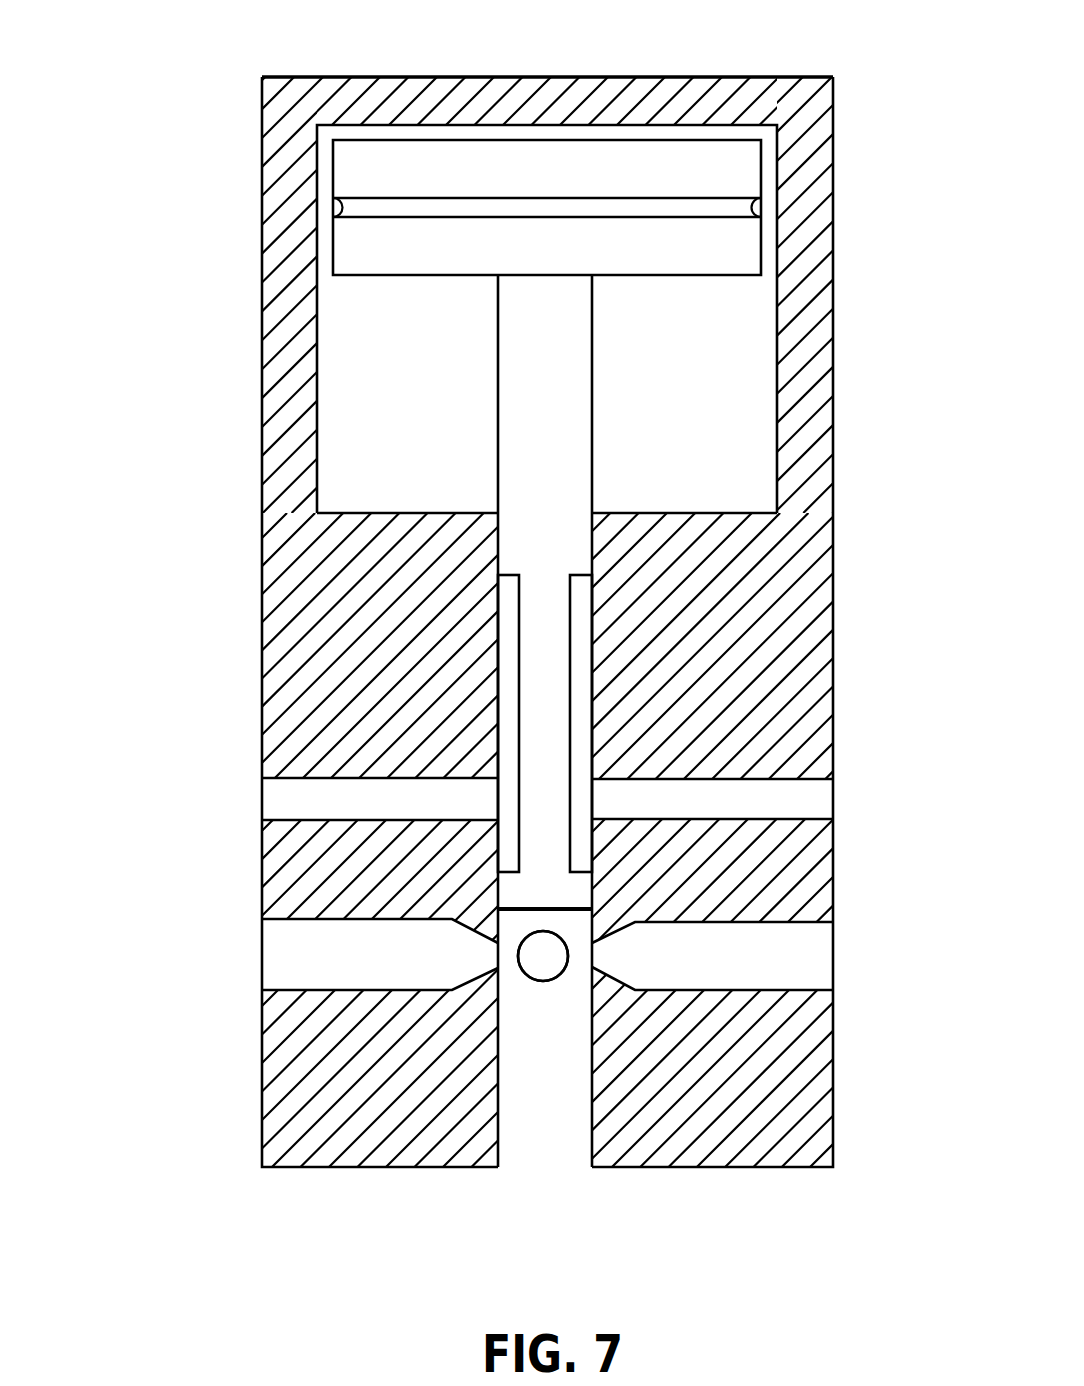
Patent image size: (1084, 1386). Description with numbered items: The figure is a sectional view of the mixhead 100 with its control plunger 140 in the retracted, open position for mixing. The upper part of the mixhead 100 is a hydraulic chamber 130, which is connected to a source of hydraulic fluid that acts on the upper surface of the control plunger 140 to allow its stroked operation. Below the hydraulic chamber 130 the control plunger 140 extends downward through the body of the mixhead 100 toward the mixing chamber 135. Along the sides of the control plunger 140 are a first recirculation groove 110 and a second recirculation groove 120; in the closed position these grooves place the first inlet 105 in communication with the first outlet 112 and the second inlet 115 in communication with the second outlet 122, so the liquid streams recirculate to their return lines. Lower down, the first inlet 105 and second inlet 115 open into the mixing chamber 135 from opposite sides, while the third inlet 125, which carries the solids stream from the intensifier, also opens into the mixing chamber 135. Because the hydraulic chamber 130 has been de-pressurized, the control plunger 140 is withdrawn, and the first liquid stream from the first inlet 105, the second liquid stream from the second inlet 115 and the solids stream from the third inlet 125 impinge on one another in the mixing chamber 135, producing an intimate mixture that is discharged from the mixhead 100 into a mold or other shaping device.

The mixhead 100 is at (238, 58).
The first inlet 105 is at (365, 976).
The first recirculation groove 110 is at (505, 668).
The first outlet 112 is at (293, 790).
The second inlet 115 is at (735, 976).
The second recirculation groove 120 is at (582, 693).
The second outlet 122 is at (797, 790).
The third inlet 125 is at (542, 966).
The hydraulic chamber 130 is at (728, 405).
The mixing chamber 135 is at (570, 1056).
The control plunger 140 is at (523, 416).